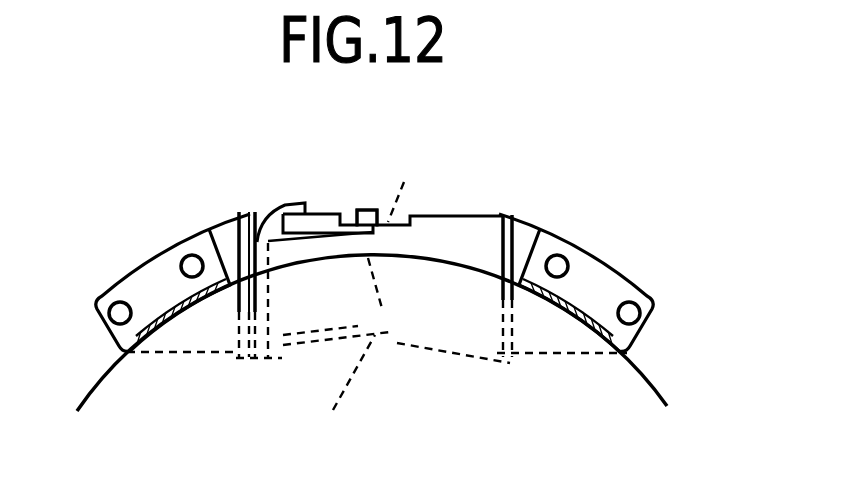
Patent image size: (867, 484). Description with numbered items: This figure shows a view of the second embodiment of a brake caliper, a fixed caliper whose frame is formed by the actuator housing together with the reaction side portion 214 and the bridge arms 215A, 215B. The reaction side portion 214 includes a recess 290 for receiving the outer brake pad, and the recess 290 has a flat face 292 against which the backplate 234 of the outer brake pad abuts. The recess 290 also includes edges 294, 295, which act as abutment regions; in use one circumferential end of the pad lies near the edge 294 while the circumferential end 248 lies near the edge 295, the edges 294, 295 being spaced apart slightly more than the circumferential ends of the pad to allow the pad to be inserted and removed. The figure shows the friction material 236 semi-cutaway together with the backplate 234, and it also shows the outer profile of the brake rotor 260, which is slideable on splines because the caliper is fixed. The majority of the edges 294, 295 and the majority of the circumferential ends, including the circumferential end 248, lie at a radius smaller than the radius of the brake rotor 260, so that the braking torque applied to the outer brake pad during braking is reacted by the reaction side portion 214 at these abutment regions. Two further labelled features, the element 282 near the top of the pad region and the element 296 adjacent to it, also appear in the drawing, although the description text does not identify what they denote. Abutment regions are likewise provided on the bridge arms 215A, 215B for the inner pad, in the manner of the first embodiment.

The reaction side portion 214 is at (620, 217).
The bridge arm 215A is at (148, 283).
The bridge arm 215B is at (603, 289).
The backplate 234 is at (273, 207).
The friction material 236 is at (356, 322).
The circumferential end 248 is at (278, 221).
The brake rotor 260 is at (651, 389).
The plate 282 is at (400, 208).
The recess 290 is at (502, 219).
The flat face 292 is at (469, 335).
The edge 294 is at (232, 312).
The edge 295 is at (485, 302).
The tab 296 is at (372, 205).